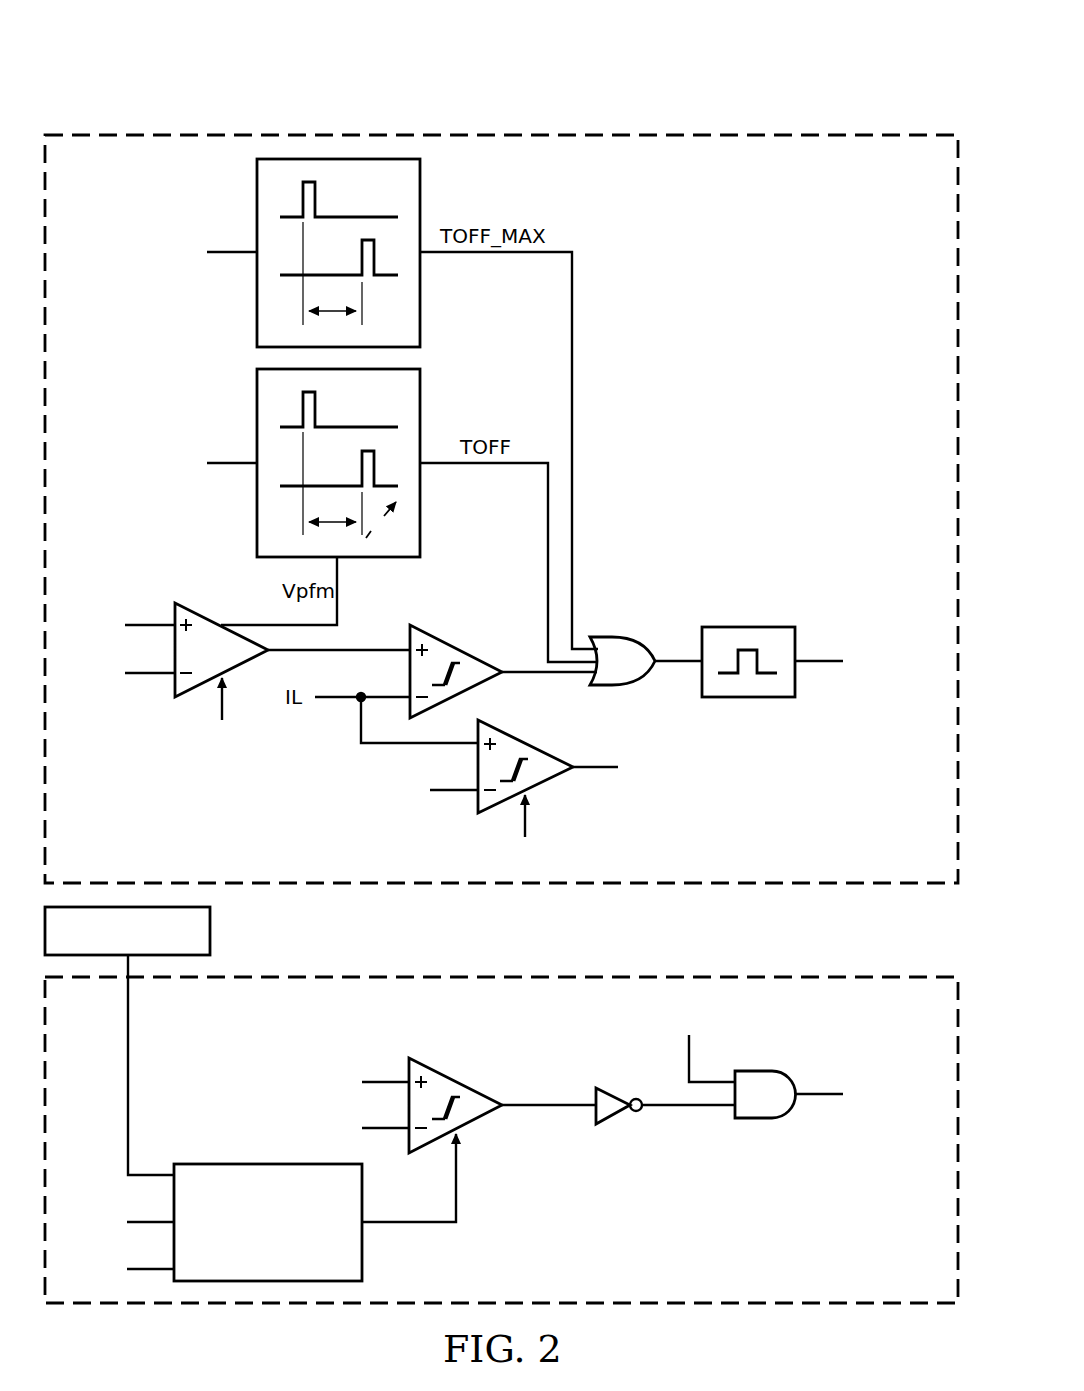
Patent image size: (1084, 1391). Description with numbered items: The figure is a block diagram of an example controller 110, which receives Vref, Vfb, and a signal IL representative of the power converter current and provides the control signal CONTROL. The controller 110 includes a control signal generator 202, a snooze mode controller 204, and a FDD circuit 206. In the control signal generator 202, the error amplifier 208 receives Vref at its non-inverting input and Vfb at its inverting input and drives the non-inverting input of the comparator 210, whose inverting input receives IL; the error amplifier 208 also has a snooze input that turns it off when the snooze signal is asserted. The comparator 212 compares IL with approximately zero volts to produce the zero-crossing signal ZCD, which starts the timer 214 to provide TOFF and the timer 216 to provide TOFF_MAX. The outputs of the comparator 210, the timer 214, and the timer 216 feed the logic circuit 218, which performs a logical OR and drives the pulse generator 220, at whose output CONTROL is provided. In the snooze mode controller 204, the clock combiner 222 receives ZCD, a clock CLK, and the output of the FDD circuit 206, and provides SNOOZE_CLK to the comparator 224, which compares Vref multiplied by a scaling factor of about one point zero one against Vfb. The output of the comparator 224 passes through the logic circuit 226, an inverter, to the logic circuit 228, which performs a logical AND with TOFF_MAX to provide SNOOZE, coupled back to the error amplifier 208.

The controller 110 is at (242, 62).
The control signal generator 202 is at (418, 132).
The snooze mode controller 204 is at (443, 974).
The FDD circuit 206 is at (210, 930).
The error amplifier 208 is at (192, 606).
The comparator 210 is at (466, 653).
The comparator 212 is at (538, 749).
The timer 214 is at (253, 439).
The timer 216 is at (253, 228).
The logic circuit 218 is at (614, 637).
The pulse generator 220 is at (745, 627).
The clock combiner 222 is at (265, 1163).
The comparator 224 is at (466, 1086).
The logic circuit 226 is at (618, 1115).
The logic circuit 228 is at (760, 1119).